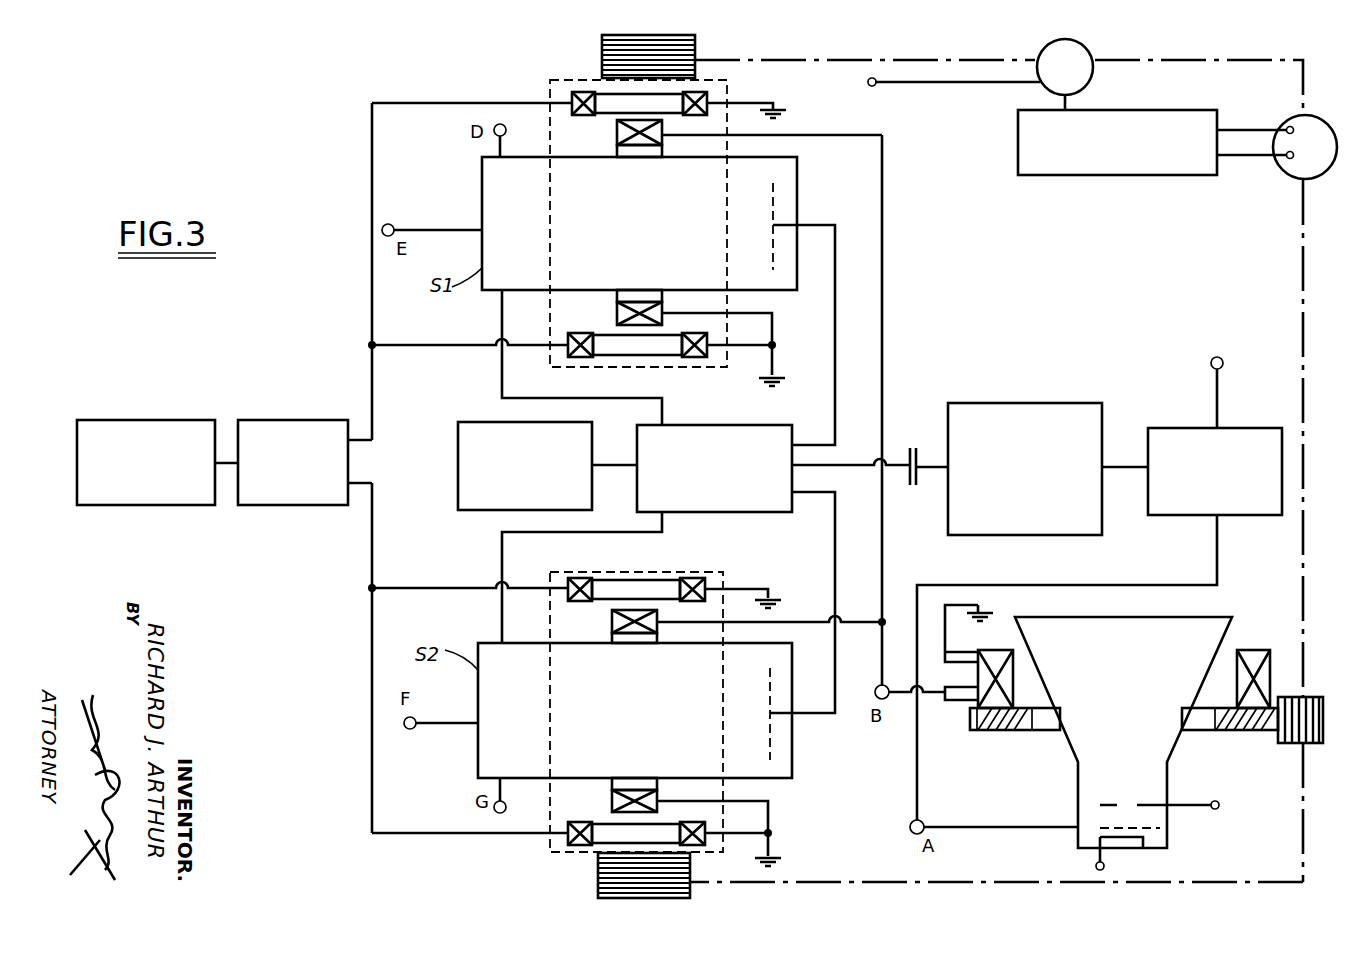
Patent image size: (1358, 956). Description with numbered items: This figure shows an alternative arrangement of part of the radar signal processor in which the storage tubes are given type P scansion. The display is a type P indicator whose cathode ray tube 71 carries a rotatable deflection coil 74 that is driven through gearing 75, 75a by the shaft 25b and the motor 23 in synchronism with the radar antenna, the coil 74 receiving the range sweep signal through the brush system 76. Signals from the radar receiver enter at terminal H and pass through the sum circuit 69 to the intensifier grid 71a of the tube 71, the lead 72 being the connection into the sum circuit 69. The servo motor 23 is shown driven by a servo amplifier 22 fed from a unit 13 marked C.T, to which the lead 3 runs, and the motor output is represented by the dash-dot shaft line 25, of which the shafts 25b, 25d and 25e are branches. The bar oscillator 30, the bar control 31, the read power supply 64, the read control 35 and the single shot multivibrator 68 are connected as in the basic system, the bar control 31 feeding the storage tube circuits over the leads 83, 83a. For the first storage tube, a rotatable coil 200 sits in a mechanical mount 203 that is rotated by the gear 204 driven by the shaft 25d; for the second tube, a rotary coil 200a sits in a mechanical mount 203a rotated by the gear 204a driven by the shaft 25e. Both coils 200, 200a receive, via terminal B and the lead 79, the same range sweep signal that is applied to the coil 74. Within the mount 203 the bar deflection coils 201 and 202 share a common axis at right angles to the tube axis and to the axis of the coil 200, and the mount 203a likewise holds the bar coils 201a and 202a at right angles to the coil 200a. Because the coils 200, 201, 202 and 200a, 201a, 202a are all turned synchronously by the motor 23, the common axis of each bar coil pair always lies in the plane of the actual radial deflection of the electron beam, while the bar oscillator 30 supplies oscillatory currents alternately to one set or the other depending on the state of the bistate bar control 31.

The wire lead to current transformer 3 is at (949, 84).
The current transformer C.T 13 is at (1091, 83).
The servo amplifier 22 is at (1125, 175).
The motor 23 is at (1287, 170).
The dash-dot enclosure line 25 is at (1165, 60).
The shaft 25b is at (1303, 282).
The shaft 25d is at (908, 60).
The shaft 25e is at (955, 882).
The bar oscillator 30 is at (140, 420).
The bar control 31 is at (285, 420).
The read control 35 is at (714, 425).
The read power supply 64 is at (458, 466).
The single shot multivibrator 68 is at (1005, 403).
The sum circuit 69 is at (1265, 515).
The cathode ray tube 71 is at (1222, 617).
The intensifier grid 71a is at (1175, 828).
The sum circuit input lead H 72 is at (1217, 412).
The rotatable deflection coil 74 is at (1270, 658).
The gearing 75 is at (1240, 732).
The gearing 75a is at (1290, 746).
The brush system 76 is at (953, 700).
The lead 79 is at (882, 552).
The conductor from bar control upper 83 is at (372, 257).
The conductor from bar control lower 83a is at (372, 644).
The rotatable coil 200 is at (617, 132).
The rotary coil 200a is at (612, 806).
The coil 201 is at (572, 98).
The coil 201a is at (598, 578).
The coil 202 is at (580, 357).
The coil 202a is at (575, 846).
The mechanical mount 203 is at (728, 88).
The mechanical mount 203a is at (690, 572).
The gear 204 is at (602, 48).
The gear 204a is at (598, 889).